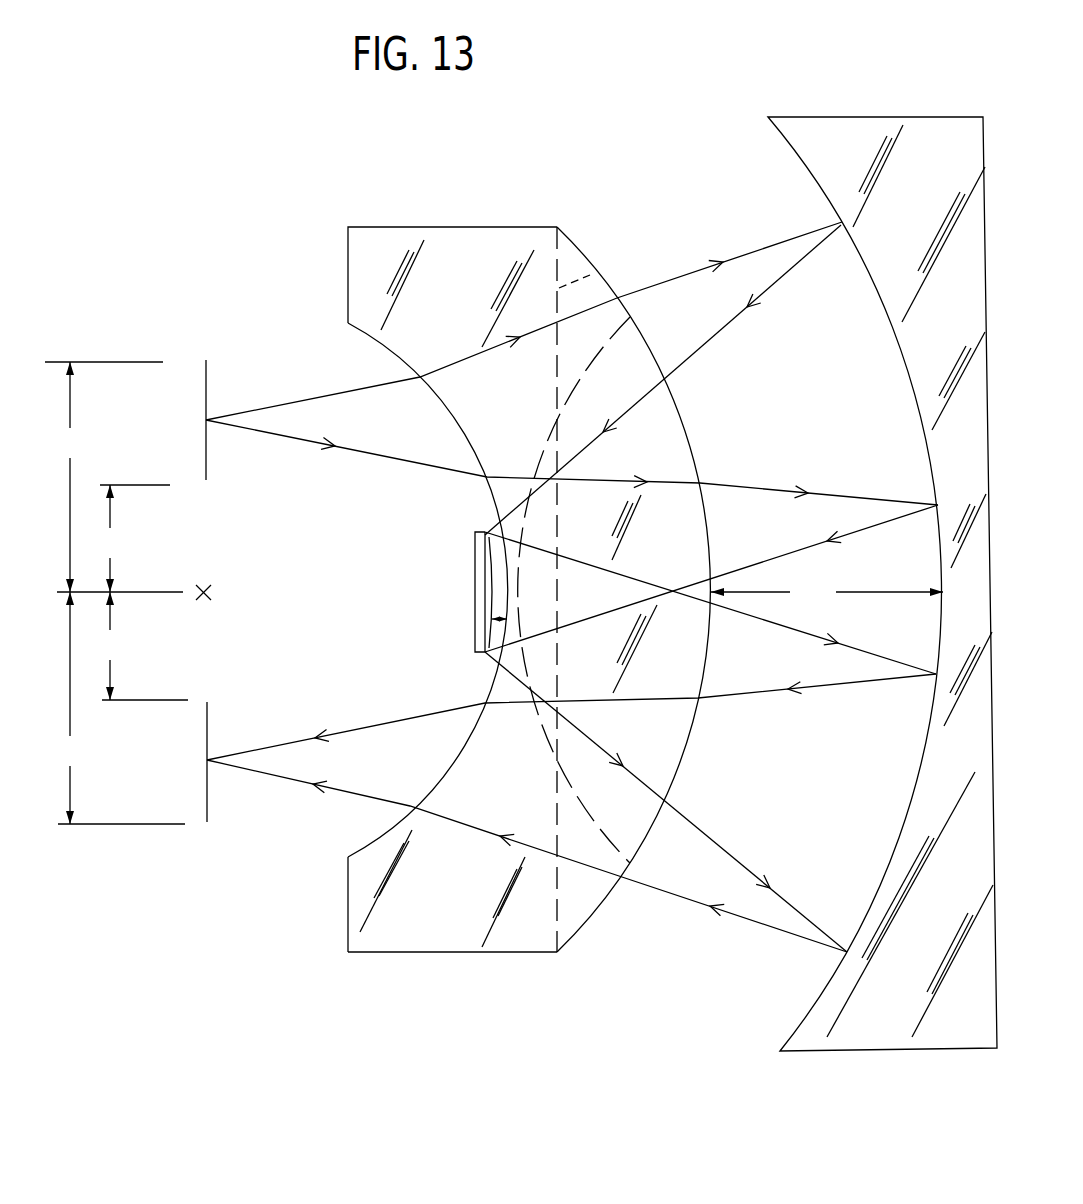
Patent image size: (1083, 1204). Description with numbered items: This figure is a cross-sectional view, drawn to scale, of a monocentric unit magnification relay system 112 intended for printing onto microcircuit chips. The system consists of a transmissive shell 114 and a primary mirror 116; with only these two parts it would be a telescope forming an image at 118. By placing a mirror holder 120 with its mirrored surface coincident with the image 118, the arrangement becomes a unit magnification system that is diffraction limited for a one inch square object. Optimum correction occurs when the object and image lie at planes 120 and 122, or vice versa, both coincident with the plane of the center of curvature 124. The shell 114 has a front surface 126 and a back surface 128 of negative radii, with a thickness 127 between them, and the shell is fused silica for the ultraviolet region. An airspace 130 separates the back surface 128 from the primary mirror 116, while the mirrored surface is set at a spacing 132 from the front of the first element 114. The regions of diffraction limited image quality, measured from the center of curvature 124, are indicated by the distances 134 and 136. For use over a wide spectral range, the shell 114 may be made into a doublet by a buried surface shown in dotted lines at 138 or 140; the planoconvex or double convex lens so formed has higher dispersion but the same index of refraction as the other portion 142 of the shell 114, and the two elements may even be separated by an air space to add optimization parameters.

The unit magnification relay system 112 is at (522, 962).
The transmissive shell 114 is at (512, 400).
The primary mirror 116 is at (915, 400).
The image 118 is at (490, 590).
The mirror holder 120 is at (205, 384).
The image plane 122 is at (206, 732).
The center of curvature 124 is at (212, 592).
The front surface 126 is at (433, 790).
The thickness 127 is at (626, 862).
The back surface 128 is at (677, 770).
The airspace 130 is at (827, 592).
The spacing 132 is at (506, 632).
The distance 134 is at (142, 592).
The distance 136 is at (115, 593).
The buried surface 138 is at (602, 267).
The buried surface 140 is at (594, 358).
The other portion of the shell 142 is at (430, 928).